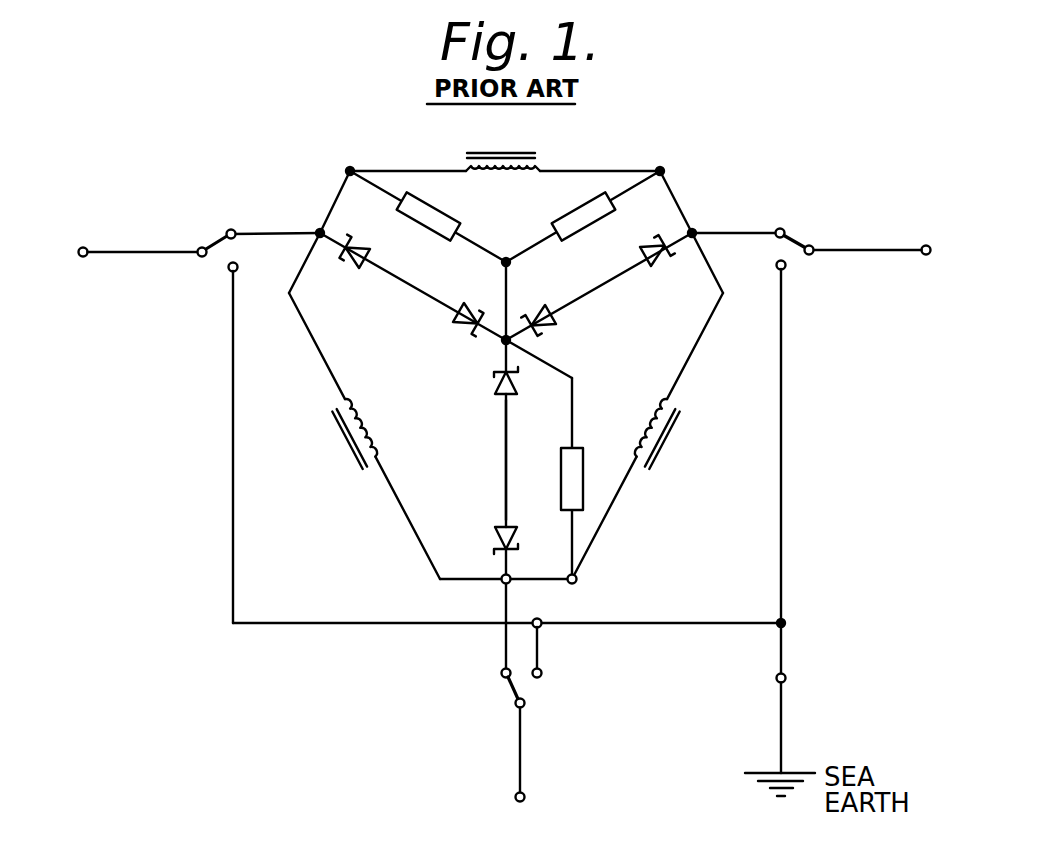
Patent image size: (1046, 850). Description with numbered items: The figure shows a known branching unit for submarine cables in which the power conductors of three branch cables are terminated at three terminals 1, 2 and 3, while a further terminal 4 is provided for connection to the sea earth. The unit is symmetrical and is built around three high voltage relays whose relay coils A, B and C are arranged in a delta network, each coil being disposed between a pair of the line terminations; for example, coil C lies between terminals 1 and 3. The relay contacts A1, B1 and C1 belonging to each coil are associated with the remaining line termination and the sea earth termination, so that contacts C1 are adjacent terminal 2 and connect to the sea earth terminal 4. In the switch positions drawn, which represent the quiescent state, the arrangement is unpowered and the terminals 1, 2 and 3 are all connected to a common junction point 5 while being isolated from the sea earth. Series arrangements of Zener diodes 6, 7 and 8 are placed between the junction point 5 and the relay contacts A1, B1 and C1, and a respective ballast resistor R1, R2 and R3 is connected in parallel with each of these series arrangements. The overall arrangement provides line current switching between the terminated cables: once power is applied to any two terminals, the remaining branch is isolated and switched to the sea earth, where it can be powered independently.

The terminal 1 is at (82, 247).
The terminal 2 is at (515, 797).
The terminal 3 is at (925, 243).
The sea earth terminal 4 is at (785, 681).
The junction point 5 is at (491, 354).
The series arrangement of Zener diodes 6 is at (402, 299).
The series arrangement of Zener diodes 7 is at (594, 308).
The series arrangement of Zener diodes 8 is at (489, 472).
The relay contacts A1 is at (209, 245).
The relay contacts B1 is at (792, 232).
The relay contacts C1 is at (530, 693).
The relay coil A is at (673, 396).
The relay coil B is at (370, 416).
The relay coil C is at (545, 158).
The ballast resistor R1 is at (440, 221).
The ballast resistor R2 is at (580, 222).
The ballast resistor R3 is at (562, 470).